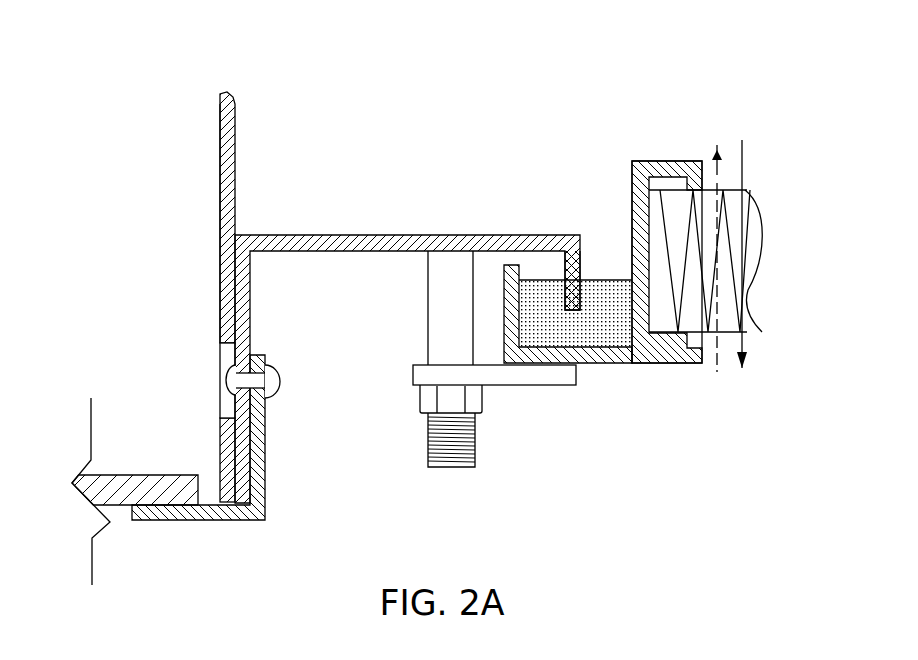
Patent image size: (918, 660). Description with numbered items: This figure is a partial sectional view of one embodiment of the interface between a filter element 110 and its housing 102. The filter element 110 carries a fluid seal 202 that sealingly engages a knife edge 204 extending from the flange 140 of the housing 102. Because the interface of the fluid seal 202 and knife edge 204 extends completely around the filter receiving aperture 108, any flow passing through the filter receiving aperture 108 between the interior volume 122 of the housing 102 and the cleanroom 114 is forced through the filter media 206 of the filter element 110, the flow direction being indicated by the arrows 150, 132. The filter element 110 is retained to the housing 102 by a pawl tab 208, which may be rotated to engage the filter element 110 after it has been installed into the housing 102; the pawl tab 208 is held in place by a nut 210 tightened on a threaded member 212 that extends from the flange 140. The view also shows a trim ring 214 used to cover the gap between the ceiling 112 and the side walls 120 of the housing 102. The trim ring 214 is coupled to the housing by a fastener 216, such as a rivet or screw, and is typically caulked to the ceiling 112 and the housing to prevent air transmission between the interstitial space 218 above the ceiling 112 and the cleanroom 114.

The housing 102 is at (240, 141).
The filter receiving aperture 108 is at (632, 135).
The filter element 110 is at (678, 160).
The ceiling 112 is at (176, 476).
The cleanroom 114 is at (668, 487).
The side walls 120 is at (220, 203).
The interior volume 122 is at (464, 110).
The arrow 132 is at (717, 175).
The flange 140 is at (394, 235).
The arrow 150 is at (747, 347).
The fluid seal 202 is at (603, 328).
The knife edge 204 is at (582, 250).
The filter media 206 is at (750, 258).
The pawl tab 208 is at (535, 386).
The nut 210 is at (419, 398).
The threaded member 212 is at (450, 468).
The trim ring 214 is at (203, 521).
The fastener 216 is at (283, 375).
The interstitial space 218 is at (100, 258).